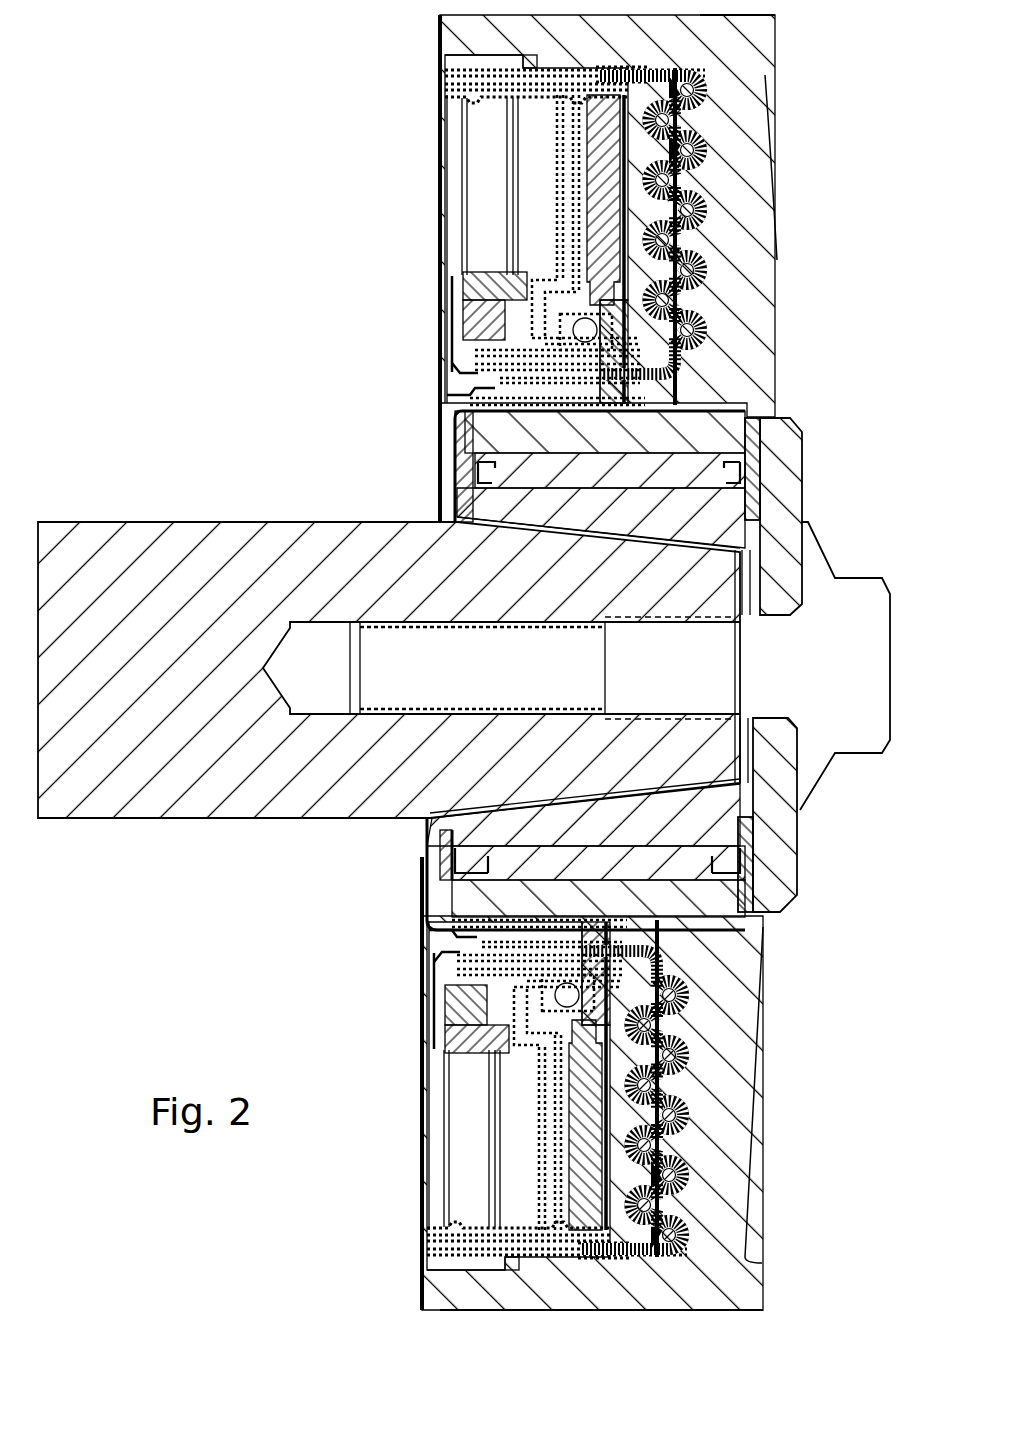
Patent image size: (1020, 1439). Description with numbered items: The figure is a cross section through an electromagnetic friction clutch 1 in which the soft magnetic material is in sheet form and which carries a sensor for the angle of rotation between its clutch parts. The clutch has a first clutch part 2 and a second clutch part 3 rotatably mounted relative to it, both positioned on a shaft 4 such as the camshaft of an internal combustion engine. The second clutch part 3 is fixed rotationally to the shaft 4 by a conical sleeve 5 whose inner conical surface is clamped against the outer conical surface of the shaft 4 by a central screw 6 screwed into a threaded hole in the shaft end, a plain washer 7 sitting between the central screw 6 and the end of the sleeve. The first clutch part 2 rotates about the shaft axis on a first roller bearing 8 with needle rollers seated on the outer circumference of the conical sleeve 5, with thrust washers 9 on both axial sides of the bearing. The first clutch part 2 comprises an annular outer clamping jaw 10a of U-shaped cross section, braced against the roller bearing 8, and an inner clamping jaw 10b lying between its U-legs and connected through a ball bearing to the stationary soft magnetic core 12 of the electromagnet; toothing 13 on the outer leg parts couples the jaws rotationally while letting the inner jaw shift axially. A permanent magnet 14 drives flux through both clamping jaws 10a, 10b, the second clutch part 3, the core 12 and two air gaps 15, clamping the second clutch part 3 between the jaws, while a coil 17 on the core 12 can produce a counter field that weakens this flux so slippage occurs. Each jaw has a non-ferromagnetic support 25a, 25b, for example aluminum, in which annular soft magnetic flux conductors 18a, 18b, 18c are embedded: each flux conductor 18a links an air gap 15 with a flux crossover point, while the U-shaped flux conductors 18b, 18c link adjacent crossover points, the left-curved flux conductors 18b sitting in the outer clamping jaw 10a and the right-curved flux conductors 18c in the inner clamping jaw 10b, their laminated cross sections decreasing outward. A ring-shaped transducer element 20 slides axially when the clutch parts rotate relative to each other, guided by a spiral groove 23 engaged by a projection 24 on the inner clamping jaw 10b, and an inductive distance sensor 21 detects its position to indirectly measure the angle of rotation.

The electromagnetic friction clutch 1 is at (150, 137).
The first clutch part 2 is at (432, 34).
The second clutch part 3 is at (455, 456).
The shaft 4 is at (132, 820).
The conical sleeve 5 is at (750, 507).
The central screw 6 is at (848, 745).
The plain washer 7 is at (790, 590).
The first roller bearing 8 is at (760, 440).
The thrust washers 9 is at (480, 485).
The outer clamping jaw 10a is at (795, 251).
The inner clamping jaw 10b is at (618, 173).
The soft magnetic core 12 is at (558, 129).
The toothing 13 is at (496, 55).
The permanent magnet 14 is at (440, 89).
The air gaps 15 is at (427, 80).
The coil 17 is at (553, 247).
The flux conductor 18a is at (620, 67).
The flux conductor 18b is at (712, 72).
The flux conductor 18c is at (555, 158).
The transducer element 20 is at (440, 325).
The sensor 21 is at (470, 274).
The groove 23 is at (455, 403).
The projection 24 is at (452, 376).
The support 25a is at (775, 298).
The support 25b is at (765, 15).